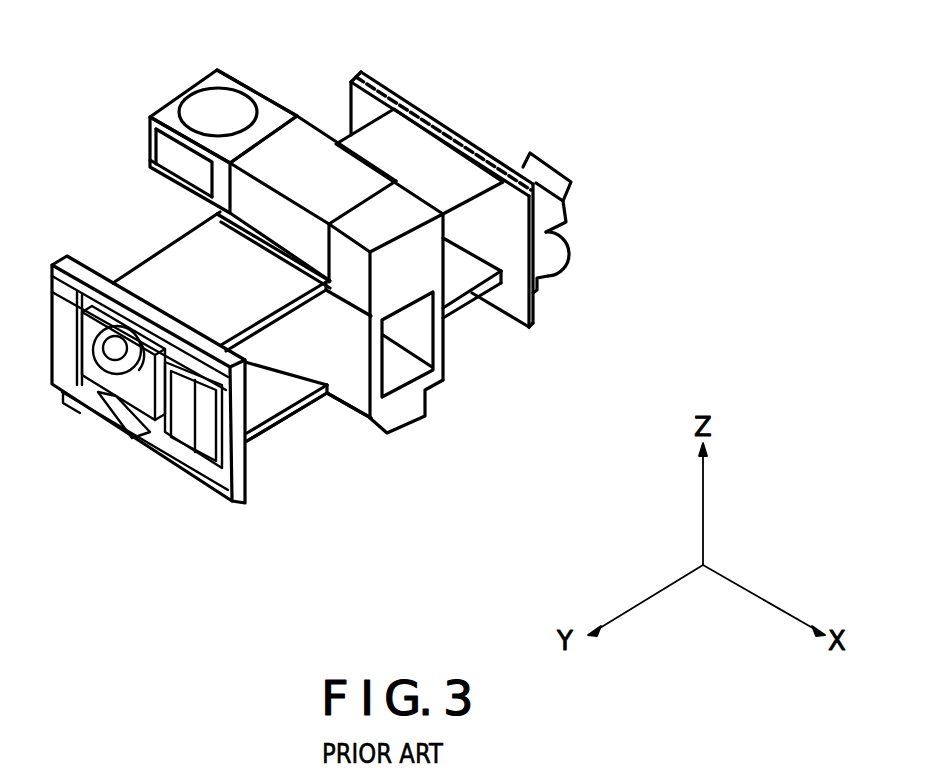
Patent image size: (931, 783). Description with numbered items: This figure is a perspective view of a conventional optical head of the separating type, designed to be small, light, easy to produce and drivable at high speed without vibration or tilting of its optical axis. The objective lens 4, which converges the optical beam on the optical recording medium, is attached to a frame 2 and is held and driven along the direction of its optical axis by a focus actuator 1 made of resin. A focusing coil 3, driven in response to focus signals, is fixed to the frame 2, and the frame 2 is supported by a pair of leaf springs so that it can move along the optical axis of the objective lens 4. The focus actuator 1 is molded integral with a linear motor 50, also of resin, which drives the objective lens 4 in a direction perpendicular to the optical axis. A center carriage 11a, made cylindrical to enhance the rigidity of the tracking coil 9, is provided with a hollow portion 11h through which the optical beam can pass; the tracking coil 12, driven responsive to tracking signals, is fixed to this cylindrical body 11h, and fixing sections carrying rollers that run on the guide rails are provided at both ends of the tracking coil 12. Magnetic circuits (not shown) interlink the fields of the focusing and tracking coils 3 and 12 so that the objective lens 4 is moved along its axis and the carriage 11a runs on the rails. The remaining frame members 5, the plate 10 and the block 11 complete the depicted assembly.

The focus actuator 1 is at (188, 76).
The frame 2 is at (219, 70).
The focusing coil 3 is at (150, 132).
The objective lens 4 is at (242, 107).
The frame 5 is at (303, 153).
The tracking coil 9 is at (446, 134).
The support plate 10 is at (448, 270).
The block 11 is at (416, 263).
The center carriage 11a is at (347, 388).
The hollow portion 11h is at (436, 382).
The tracking coil 12 is at (267, 437).
The linear motor 50 is at (418, 435).